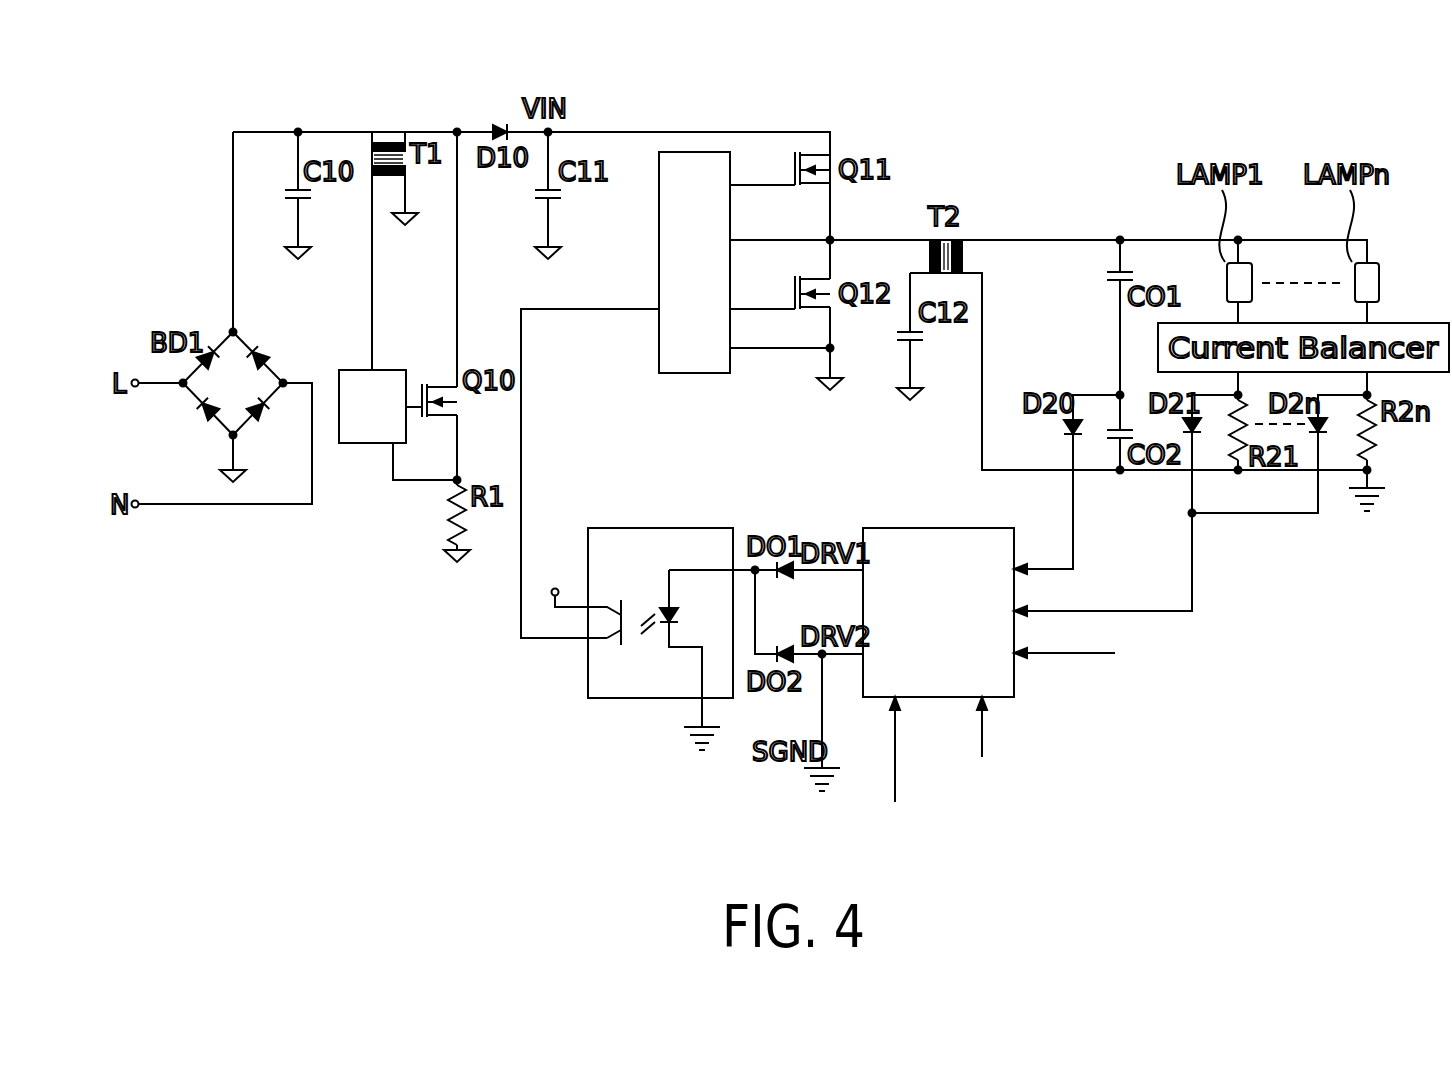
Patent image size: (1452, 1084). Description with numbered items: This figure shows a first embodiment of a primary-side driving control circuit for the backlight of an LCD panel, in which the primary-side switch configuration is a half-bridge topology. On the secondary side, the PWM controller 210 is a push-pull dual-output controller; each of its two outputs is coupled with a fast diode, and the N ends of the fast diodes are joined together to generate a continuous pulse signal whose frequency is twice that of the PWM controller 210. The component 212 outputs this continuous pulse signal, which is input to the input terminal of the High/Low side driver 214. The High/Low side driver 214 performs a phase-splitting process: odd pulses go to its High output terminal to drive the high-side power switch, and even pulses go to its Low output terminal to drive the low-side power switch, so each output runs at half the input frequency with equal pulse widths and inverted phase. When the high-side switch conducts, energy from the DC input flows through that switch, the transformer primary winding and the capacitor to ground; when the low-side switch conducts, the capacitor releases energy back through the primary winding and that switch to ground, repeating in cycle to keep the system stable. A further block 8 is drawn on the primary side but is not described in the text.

The power factor correction controller 8 is at (372, 443).
The PWM controller 210 is at (1014, 680).
The component 212 is at (652, 698).
The High/Low side driver 214 is at (692, 152).